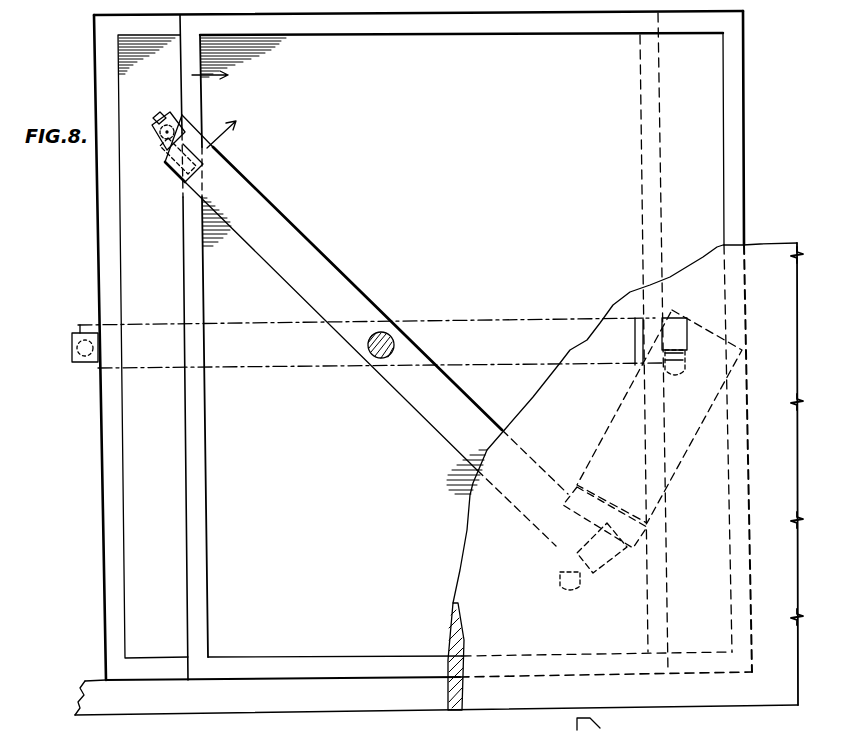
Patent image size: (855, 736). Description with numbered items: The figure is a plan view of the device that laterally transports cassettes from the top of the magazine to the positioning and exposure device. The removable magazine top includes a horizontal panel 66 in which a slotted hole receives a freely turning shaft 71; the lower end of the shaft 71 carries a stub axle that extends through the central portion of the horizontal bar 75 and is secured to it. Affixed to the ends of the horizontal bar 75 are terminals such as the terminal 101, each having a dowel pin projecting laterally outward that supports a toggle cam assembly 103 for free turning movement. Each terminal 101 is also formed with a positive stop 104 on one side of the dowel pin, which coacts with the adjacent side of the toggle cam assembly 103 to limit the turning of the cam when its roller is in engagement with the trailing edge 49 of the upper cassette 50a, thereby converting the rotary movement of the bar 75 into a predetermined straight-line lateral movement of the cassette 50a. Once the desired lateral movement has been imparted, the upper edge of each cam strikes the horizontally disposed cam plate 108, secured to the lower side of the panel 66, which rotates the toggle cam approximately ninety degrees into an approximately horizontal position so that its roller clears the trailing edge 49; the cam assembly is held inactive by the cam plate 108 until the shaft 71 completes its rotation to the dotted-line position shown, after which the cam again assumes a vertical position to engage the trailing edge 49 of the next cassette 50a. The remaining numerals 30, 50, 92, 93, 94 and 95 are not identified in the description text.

The base plate 30 is at (163, 708).
The trailing edge 49 is at (148, 325).
The frame member (hidden position) 50 is at (658, 133).
The upper cassette 50a is at (738, 82).
The horizontal panel 66 is at (470, 535).
The shaft 71 is at (378, 358).
The horizontal bar 75 is at (267, 190).
The guide rail 92 is at (375, 734).
The guide rail 93 is at (510, 720).
The support 94 is at (601, 726).
The guide rail 95 is at (387, 719).
The terminal 101 is at (206, 172).
The toggle cam assembly 103 is at (166, 155).
The positive stop 104 is at (199, 118).
The cam plate 108 is at (685, 453).